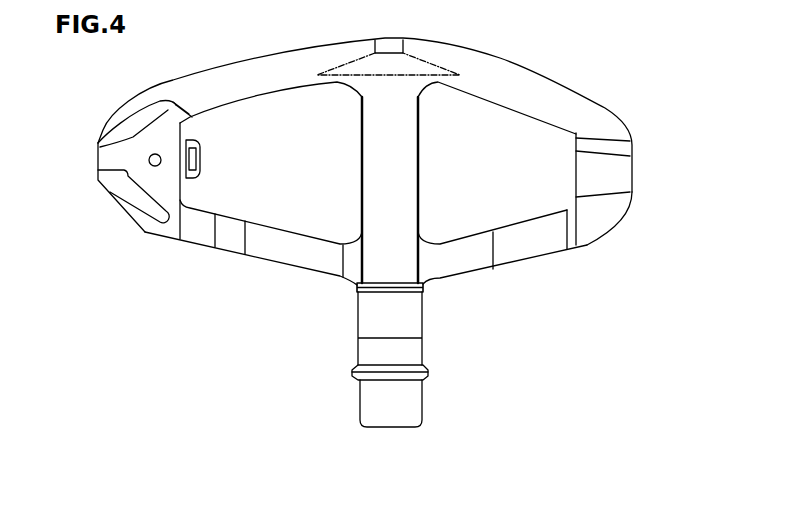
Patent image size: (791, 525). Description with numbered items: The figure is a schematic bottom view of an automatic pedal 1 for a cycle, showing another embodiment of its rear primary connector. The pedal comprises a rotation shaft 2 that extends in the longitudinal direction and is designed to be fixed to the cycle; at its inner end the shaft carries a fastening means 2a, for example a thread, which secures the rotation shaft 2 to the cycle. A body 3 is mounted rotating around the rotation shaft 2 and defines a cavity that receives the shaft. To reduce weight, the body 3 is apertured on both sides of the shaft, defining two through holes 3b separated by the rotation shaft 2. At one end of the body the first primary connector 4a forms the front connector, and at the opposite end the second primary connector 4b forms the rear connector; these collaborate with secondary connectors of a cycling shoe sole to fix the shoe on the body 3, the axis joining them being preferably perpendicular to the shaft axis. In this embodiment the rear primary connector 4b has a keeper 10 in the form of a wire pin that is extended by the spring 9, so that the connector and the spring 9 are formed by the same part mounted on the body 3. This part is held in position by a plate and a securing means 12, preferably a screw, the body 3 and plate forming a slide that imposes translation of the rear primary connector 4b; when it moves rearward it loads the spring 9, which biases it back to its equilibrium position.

The automatic pedal 1 is at (359, 229).
The rotation shaft 2 is at (413, 355).
The fastening means 2a is at (413, 407).
The body 3 is at (477, 255).
The through holes 3b is at (508, 128).
The first primary connector 4a is at (595, 182).
The second primary connector 4b is at (240, 148).
The keeper 10 is at (195, 180).
The spring 9 is at (133, 128).
The securing means 12 is at (153, 163).